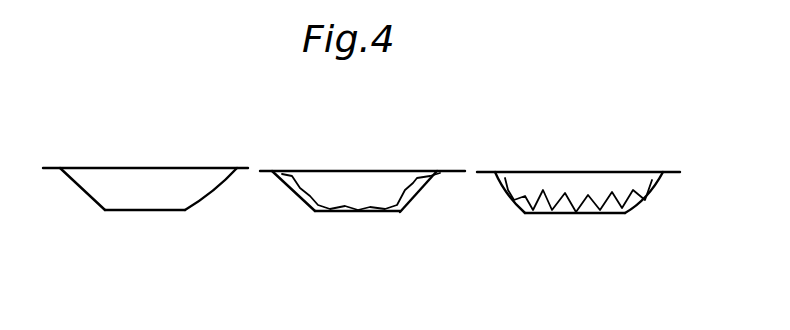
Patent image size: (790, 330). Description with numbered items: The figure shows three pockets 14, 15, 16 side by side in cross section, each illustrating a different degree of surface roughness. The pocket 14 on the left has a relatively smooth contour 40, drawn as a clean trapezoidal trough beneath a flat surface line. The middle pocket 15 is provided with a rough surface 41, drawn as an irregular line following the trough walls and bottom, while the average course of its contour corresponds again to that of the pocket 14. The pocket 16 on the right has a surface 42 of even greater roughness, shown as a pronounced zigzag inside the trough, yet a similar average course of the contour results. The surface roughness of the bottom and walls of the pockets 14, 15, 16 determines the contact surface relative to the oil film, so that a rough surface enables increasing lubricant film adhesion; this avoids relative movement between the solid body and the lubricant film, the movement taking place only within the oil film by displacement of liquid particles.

The pocket 14 is at (145, 183).
The smooth contour 40 is at (127, 210).
The pocket 15 is at (380, 144).
The rough surface 41 is at (418, 183).
The pocket 16 is at (578, 144).
The surface 42 is at (542, 197).